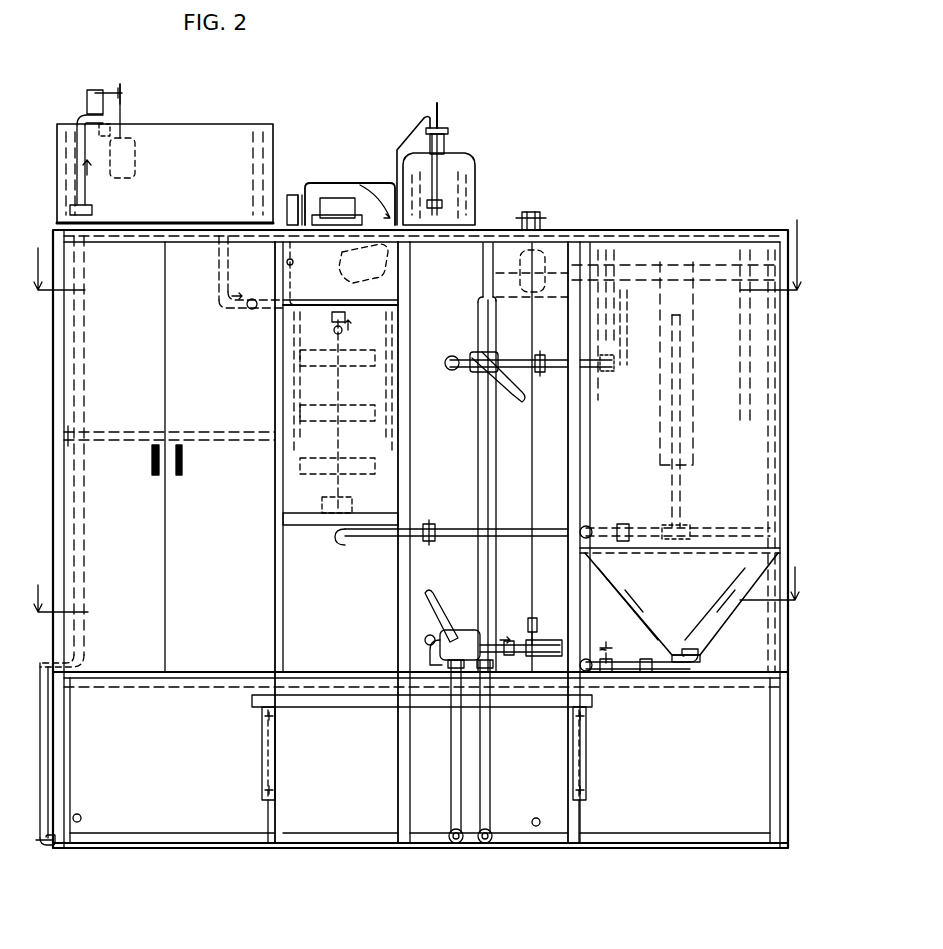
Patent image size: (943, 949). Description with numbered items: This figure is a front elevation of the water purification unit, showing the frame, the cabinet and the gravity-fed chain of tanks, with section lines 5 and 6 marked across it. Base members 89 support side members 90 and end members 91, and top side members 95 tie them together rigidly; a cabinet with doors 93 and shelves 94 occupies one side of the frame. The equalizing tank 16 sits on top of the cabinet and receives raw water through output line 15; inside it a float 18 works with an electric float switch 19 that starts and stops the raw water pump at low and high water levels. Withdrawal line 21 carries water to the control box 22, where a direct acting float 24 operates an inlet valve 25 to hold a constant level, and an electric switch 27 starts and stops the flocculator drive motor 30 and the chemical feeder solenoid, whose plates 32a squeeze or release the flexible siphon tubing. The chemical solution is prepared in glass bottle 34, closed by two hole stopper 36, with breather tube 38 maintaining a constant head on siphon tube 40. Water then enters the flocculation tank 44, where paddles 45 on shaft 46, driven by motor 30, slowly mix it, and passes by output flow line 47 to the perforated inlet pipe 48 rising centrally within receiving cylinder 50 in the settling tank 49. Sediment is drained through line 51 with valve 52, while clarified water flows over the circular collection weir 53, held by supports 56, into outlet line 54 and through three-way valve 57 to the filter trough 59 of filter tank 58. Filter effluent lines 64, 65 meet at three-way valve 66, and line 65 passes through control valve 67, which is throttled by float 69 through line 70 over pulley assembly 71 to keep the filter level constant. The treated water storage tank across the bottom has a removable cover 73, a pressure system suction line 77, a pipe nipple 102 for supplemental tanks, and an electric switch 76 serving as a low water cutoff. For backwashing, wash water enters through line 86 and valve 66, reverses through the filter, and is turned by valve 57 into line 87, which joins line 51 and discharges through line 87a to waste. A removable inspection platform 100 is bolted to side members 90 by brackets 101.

The section line 5- 5 is at (415, 241).
The section line 6- 6 is at (417, 576).
The output line 15 is at (80, 115).
The equalizing tank 16 is at (218, 184).
The float 18 is at (126, 148).
The electric float switch 19 is at (95, 88).
The withdrawal line 21 is at (222, 292).
The control box 22 is at (318, 285).
The direct acting float 24 is at (370, 275).
The inlet valve 25 is at (295, 210).
The electric switch 27 is at (293, 205).
The flocculator drive motor 30 is at (327, 195).
The plates 32a is at (364, 190).
The glass bottle 34 is at (450, 157).
The two hole stopper 36 is at (440, 132).
The breather tube 38 is at (437, 110).
The siphon tube 40 is at (412, 140).
The flocculation tank 44 is at (385, 455).
The paddles 45 is at (320, 480).
The shaft 46 is at (335, 428).
The output flow line 47 is at (460, 530).
The perforated inlet pipe 48 is at (680, 492).
The settling tank 49 is at (620, 462).
The receiving cylinder 50 is at (685, 380).
The drain line 51 is at (680, 658).
The valve 52 is at (608, 650).
The circular collection weir 53 is at (735, 280).
The outlet line 54 is at (612, 363).
The supports 56 is at (602, 268).
The three-way valve 57 is at (475, 352).
The filter tank 58 is at (495, 445).
The filter trough 59 is at (490, 280).
The filter effluent line 64 is at (420, 539).
The filter effluent line 65 is at (500, 640).
The three-way valve 66 is at (465, 635).
The control valve 67 is at (535, 618).
The float 69 is at (540, 265).
The line 70 is at (532, 470).
The pulley assembly 71 is at (525, 212).
The removable cover 73 is at (548, 645).
The electric switch 76 is at (430, 635).
The pressure system suction line 77 is at (535, 818).
The line 86 is at (452, 760).
The line 87 is at (478, 425).
The line 87a is at (490, 755).
The base members 89 is at (182, 835).
The side members 90 is at (268, 822).
The end members 91 is at (66, 749).
The doors 93 is at (150, 524).
The shelves 94 is at (128, 432).
The top side members 95 is at (465, 232).
The inspection platform 100 is at (360, 710).
The brackets 101 is at (265, 735).
The pipe nipple 102 is at (78, 815).